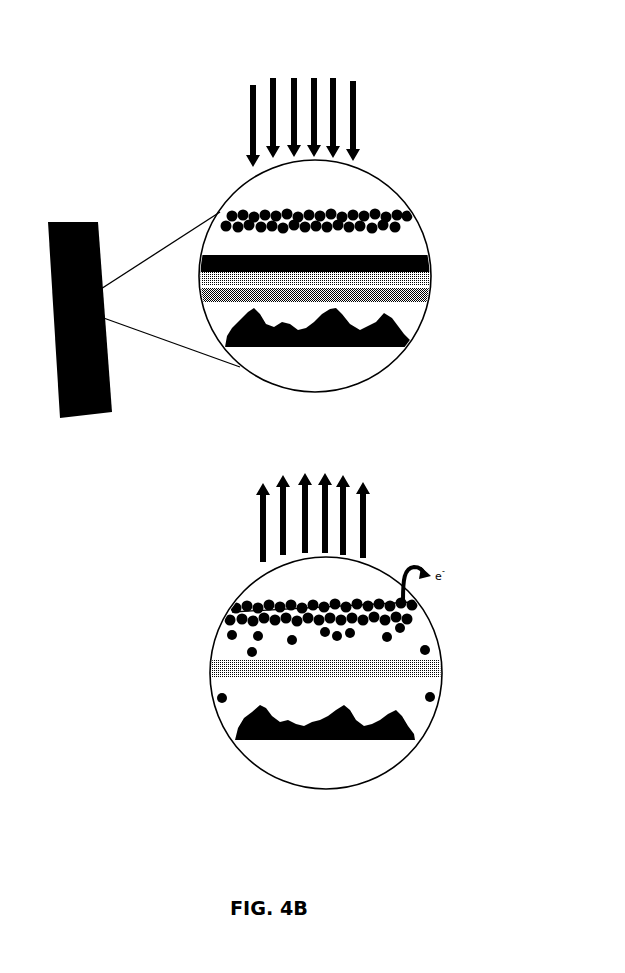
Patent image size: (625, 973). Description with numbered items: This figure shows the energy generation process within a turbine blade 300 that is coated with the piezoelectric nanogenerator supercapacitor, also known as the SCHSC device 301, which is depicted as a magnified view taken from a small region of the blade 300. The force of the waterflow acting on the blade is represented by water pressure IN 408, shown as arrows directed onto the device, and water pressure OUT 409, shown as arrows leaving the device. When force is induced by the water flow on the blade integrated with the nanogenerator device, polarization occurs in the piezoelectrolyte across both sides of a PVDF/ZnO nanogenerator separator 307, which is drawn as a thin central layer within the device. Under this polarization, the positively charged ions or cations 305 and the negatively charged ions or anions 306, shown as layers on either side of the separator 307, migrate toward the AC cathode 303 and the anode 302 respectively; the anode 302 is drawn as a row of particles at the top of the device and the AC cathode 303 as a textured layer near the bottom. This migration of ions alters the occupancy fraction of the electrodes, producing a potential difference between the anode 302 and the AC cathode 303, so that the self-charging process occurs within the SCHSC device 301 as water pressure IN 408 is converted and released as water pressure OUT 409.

The turbine blade 300 is at (80, 336).
The SCHSC device 301 is at (158, 105).
The anode 302 is at (403, 217).
The AC cathode 303 is at (408, 340).
The positively charged ions/cations (K+) 305 is at (428, 303).
The negatively charged ions/anions (OH-) 306 is at (429, 257).
The PVDF/ZnO nanogenerator separator 307 is at (431, 278).
The water pressure IN 408 is at (303, 106).
The water pressure OUT 409 is at (313, 507).